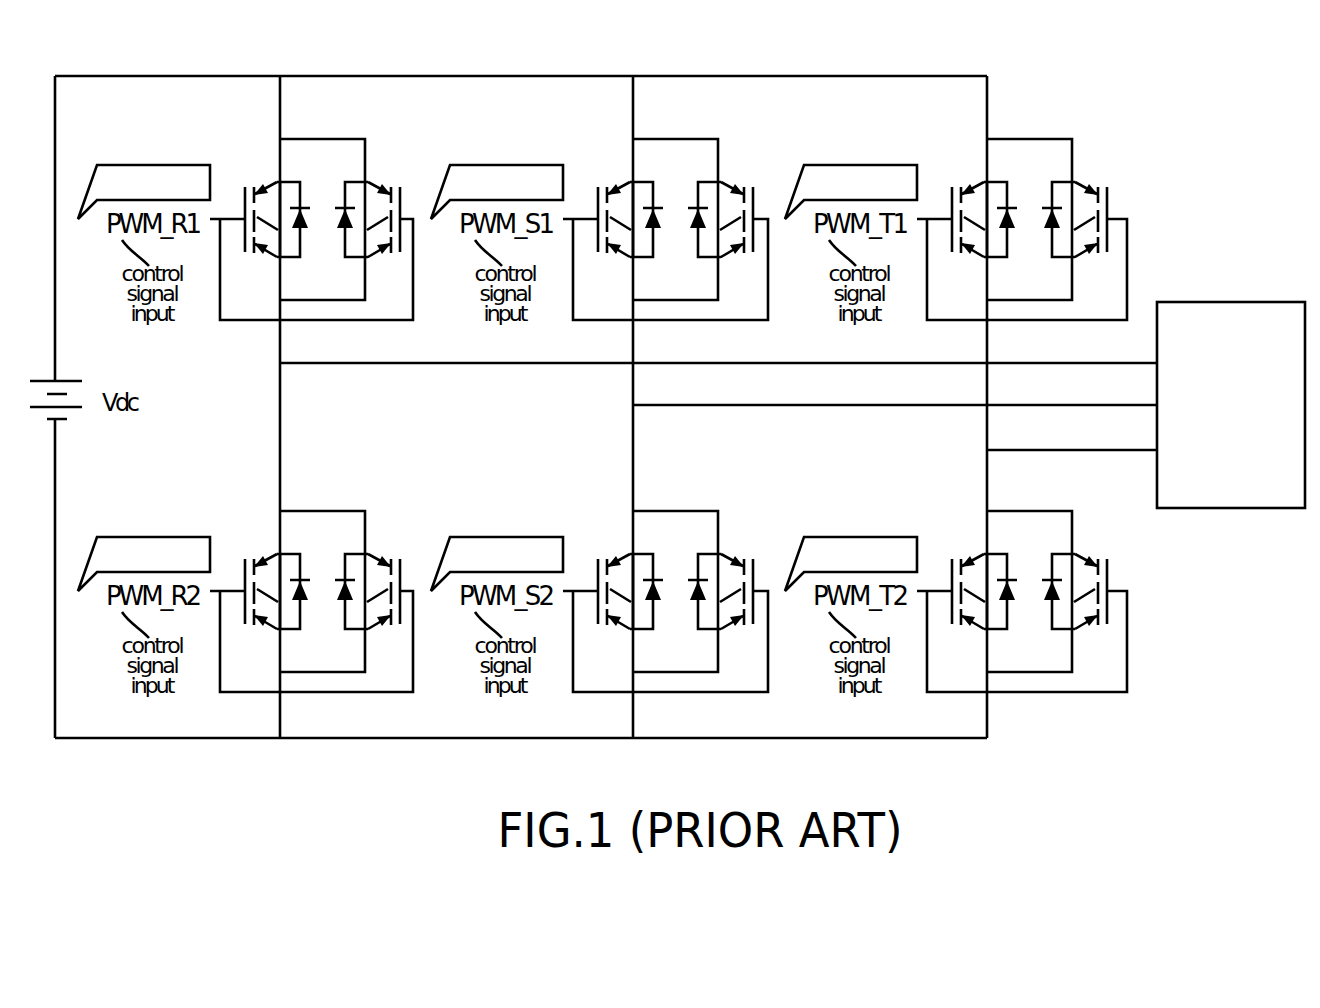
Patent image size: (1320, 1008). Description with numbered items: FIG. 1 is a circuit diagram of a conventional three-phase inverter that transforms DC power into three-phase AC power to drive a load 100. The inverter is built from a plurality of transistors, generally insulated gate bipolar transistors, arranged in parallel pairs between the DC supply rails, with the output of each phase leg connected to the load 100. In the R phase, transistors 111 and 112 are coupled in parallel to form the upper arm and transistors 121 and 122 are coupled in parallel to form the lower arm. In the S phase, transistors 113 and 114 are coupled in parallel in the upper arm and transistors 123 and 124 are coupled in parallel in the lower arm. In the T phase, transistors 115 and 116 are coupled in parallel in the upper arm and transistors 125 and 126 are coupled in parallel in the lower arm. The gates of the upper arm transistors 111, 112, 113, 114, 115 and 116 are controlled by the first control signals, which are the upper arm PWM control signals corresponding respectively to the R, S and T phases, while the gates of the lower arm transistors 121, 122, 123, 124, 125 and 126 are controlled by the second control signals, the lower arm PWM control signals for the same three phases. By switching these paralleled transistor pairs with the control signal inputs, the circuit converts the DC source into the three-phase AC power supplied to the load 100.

The load 100 is at (1233, 302).
The transistor 111 is at (260, 177).
The transistor 112 is at (377, 177).
The transistor 113 is at (613, 177).
The transistor 114 is at (730, 177).
The transistor 115 is at (967, 177).
The transistor 116 is at (1084, 177).
The transistor 121 is at (260, 549).
The transistor 122 is at (377, 549).
The transistor 123 is at (613, 549).
The transistor 124 is at (730, 549).
The transistor 125 is at (967, 549).
The transistor 126 is at (1084, 549).